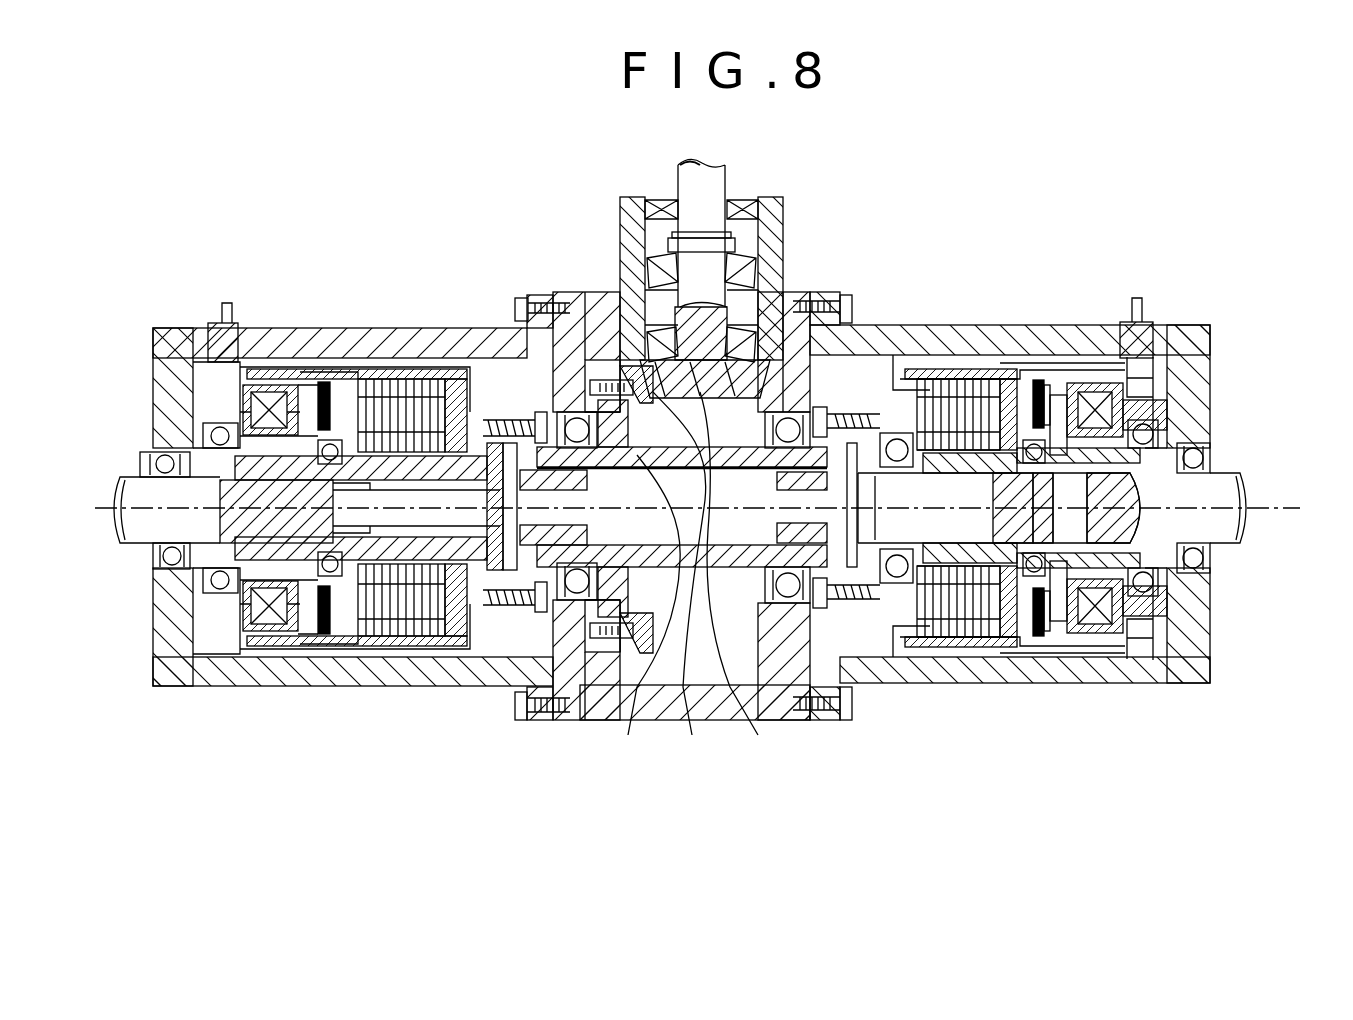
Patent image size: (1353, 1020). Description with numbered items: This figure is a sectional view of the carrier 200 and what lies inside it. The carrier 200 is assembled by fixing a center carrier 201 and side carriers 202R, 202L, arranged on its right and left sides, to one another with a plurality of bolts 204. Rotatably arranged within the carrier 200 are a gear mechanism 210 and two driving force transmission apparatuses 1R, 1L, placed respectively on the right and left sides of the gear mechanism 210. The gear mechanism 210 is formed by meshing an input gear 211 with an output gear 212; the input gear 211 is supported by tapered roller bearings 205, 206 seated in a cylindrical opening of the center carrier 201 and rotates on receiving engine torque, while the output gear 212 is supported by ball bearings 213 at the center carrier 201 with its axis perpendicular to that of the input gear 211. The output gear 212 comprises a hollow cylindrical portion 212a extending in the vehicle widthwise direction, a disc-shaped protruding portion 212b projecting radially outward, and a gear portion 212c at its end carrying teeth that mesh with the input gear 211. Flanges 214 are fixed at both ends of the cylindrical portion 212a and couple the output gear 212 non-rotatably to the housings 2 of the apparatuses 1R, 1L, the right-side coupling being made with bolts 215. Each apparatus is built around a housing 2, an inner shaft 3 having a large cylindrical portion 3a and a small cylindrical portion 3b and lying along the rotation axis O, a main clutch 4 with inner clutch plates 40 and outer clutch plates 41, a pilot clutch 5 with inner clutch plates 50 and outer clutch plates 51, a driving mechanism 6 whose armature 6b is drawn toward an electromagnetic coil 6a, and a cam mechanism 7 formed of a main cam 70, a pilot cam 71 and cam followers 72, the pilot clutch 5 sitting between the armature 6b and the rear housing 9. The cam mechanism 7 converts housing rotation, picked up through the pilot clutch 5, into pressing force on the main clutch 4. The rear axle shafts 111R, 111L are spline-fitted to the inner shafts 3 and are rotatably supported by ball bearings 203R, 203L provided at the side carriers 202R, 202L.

The carrier 200 is at (895, 188).
The center carrier 201 is at (783, 205).
The side carrier 202L is at (458, 343).
The side carrier 202R is at (975, 350).
The ball bearing 203L is at (150, 449).
The ball bearing 203R is at (1209, 455).
The bolt 204 is at (522, 298).
The tapered roller bearing 205 is at (753, 267).
The tapered roller bearing 206 is at (757, 337).
The gear mechanism 210 is at (605, 355).
The input gear 211 is at (730, 388).
The output gear 212 is at (668, 556).
The hollow cylindrical portion 212a is at (637, 610).
The disc-shaped protruding portion 212b is at (690, 579).
The gear portion 212c is at (747, 579).
The ball bearing 213 is at (660, 470).
The flange 214 is at (590, 531).
The bolt 215 is at (545, 412).
The rear axle shaft 111L is at (140, 490).
The rear axle shaft 111R is at (1222, 475).
The driving force transmission apparatus 1L is at (386, 360).
The driving force transmission apparatus 1R is at (1085, 534).
The housing 2 is at (1208, 499).
The inner shaft 3 is at (1053, 529).
The large cylindrical portion 3a is at (925, 547).
The small cylindrical portion 3b is at (1140, 482).
The main clutch 4 is at (930, 644).
The inner clutch plate 40 is at (887, 508).
The outer clutch plate 41 is at (960, 644).
The pilot clutch 5 is at (1071, 506).
The inner clutch plate 50 is at (1036, 642).
The outer clutch plate 51 is at (1047, 642).
The driving mechanism 6 is at (1087, 534).
The electromagnetic coil 6a is at (1100, 644).
The armature 6b is at (1042, 644).
The cam mechanism 7 is at (1007, 374).
The main cam 70 is at (1042, 374).
The pilot cam 71 is at (1060, 508).
The cam follower 72 is at (989, 508).
The rear housing 9 is at (1130, 387).
The rotation axis O is at (1262, 512).